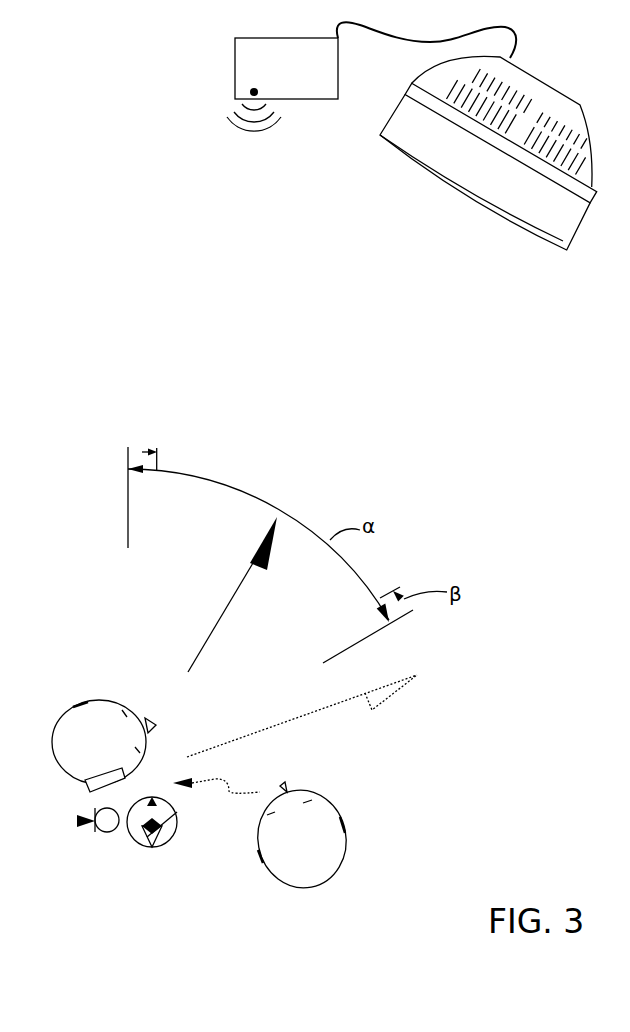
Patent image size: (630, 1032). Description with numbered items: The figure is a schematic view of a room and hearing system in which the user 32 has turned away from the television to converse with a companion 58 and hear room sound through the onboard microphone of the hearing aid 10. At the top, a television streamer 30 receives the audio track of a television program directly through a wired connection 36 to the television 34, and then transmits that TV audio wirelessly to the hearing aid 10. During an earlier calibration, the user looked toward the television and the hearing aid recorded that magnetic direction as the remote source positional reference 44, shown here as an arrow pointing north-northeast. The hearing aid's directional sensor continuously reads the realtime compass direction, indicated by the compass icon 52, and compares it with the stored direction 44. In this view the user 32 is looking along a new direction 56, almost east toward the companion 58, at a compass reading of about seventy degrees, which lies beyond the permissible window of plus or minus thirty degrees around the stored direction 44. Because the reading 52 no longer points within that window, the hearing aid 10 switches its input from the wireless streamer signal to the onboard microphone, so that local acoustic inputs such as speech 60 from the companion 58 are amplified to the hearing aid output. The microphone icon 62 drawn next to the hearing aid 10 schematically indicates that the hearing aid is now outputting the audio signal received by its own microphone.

The hearing aid 10 is at (123, 773).
The television streamer 30 is at (243, 70).
The user 32 is at (85, 716).
The television 34 is at (528, 212).
The wired connection 36 is at (372, 31).
The remote source positional reference 44 is at (225, 605).
The compass icon 52 is at (148, 833).
The new direction 56 is at (295, 720).
The companion 58 is at (330, 820).
The speech 60 is at (230, 786).
The microphone icon 62 is at (107, 833).